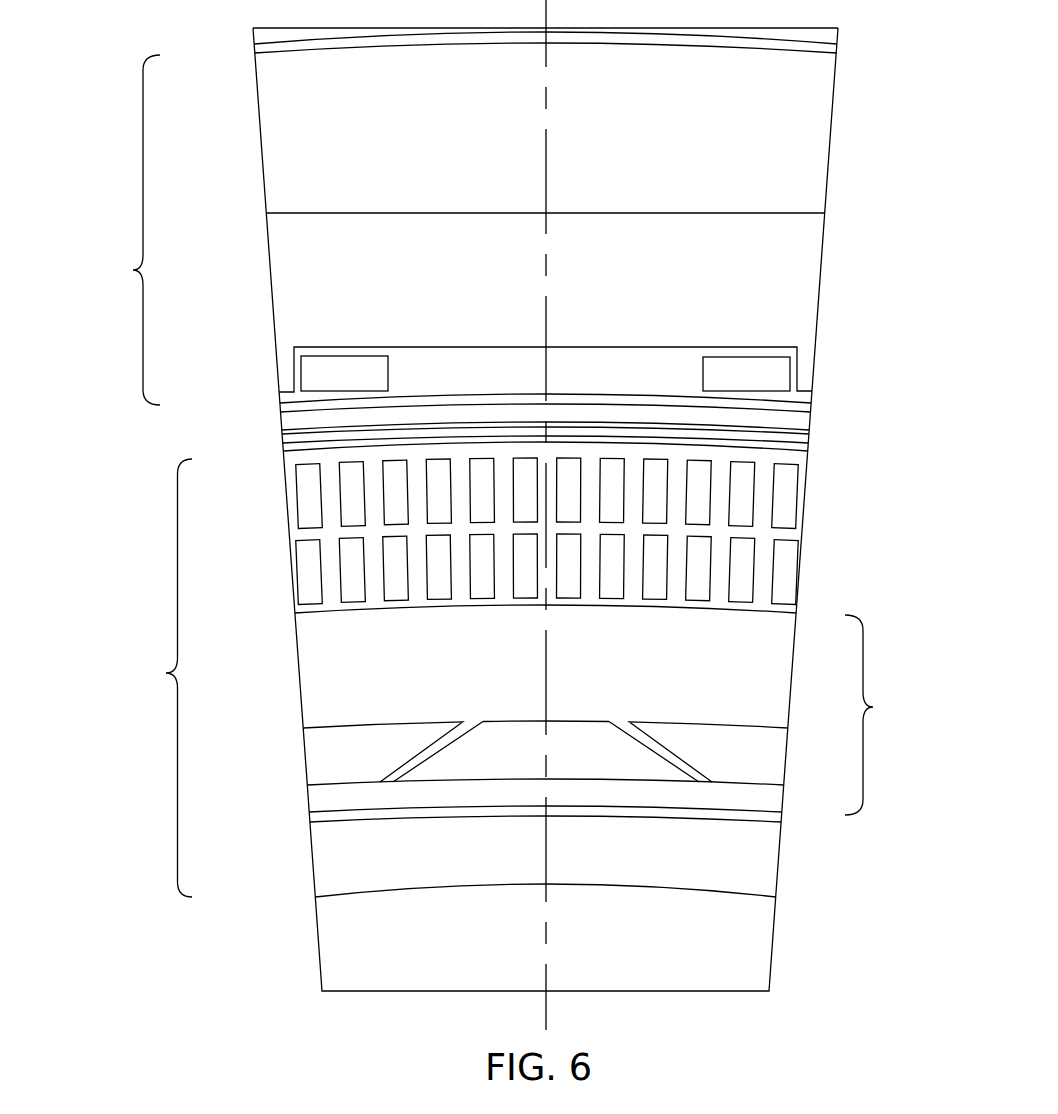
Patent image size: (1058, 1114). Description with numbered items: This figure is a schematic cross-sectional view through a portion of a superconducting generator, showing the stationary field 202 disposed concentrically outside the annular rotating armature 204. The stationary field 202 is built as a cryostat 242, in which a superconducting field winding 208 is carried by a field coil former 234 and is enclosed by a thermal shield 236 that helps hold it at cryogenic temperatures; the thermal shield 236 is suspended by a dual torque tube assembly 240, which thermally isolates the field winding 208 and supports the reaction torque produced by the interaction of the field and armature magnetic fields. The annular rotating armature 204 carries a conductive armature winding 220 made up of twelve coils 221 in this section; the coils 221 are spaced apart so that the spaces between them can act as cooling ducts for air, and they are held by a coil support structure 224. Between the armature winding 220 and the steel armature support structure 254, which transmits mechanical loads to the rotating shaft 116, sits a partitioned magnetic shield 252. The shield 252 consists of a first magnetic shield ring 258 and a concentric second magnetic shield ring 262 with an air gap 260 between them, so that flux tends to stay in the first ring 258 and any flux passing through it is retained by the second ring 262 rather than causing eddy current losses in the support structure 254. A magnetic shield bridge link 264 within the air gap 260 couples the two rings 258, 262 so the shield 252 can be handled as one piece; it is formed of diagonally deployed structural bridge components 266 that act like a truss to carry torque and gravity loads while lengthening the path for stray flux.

The rotating shaft 116 is at (758, 943).
The stationary field 202 is at (133, 270).
The annular rotating armature 204 is at (166, 673).
The superconducting field winding 208 is at (310, 372).
The conductive armature winding 220 is at (785, 578).
The coils 221 is at (392, 506).
The coil support structure 224 is at (768, 495).
The field coil former 234 is at (805, 285).
The thermal shield 236 is at (256, 49).
The dual torque tube assembly 240 is at (818, 127).
The cryostat 242 is at (283, 440).
The partitioned magnetic shield 252 is at (873, 707).
The armature support structure 254 is at (765, 860).
The first magnetic shield ring 258 is at (308, 653).
The air gap 260 is at (315, 776).
The second magnetic shield ring 262 is at (315, 805).
The magnetic shield bridge link 264 is at (700, 747).
The structural bridge components 266 is at (402, 762).